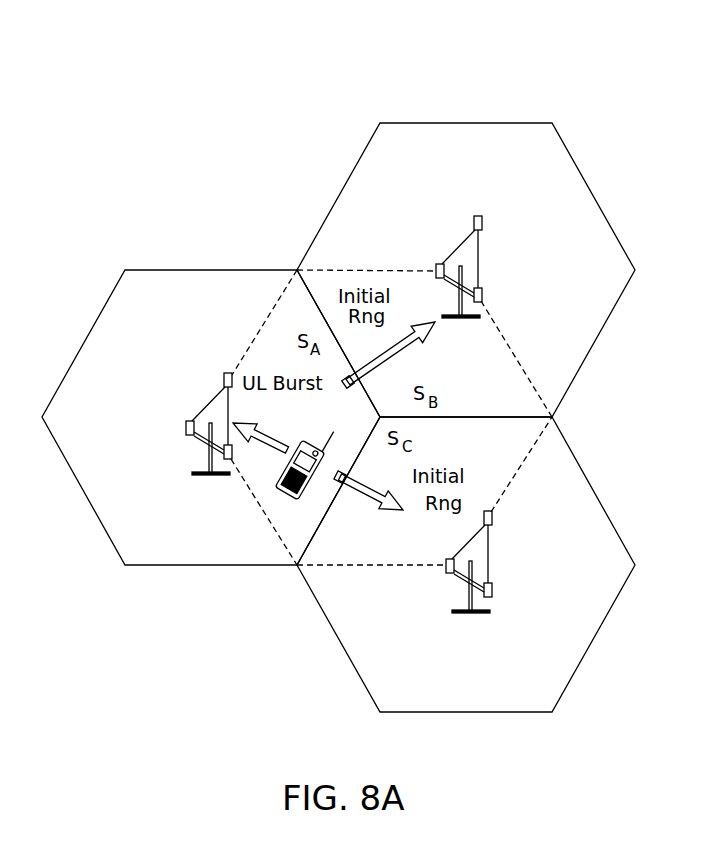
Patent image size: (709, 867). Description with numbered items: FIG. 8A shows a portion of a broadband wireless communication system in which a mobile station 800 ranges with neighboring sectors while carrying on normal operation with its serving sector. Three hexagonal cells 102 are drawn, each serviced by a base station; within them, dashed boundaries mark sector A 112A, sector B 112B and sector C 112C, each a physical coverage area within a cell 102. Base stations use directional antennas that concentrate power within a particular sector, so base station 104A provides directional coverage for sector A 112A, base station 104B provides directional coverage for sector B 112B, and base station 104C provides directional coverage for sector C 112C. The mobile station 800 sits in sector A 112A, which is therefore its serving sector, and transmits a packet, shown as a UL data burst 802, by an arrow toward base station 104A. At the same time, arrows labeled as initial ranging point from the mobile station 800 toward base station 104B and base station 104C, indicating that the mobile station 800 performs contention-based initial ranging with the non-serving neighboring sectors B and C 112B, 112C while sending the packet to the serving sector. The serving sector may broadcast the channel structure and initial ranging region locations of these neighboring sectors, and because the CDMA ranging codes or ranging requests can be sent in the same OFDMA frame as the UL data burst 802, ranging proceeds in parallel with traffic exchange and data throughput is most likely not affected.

The cell 102 is at (160, 270).
The sector A 112A is at (285, 308).
The sector B 112B is at (492, 375).
The sector C 112C is at (353, 538).
The base station A 104A is at (187, 428).
The base station B 104B is at (483, 227).
The base station C 104C is at (492, 580).
The mobile station 800 is at (290, 500).
The UL data burst 802 is at (268, 441).